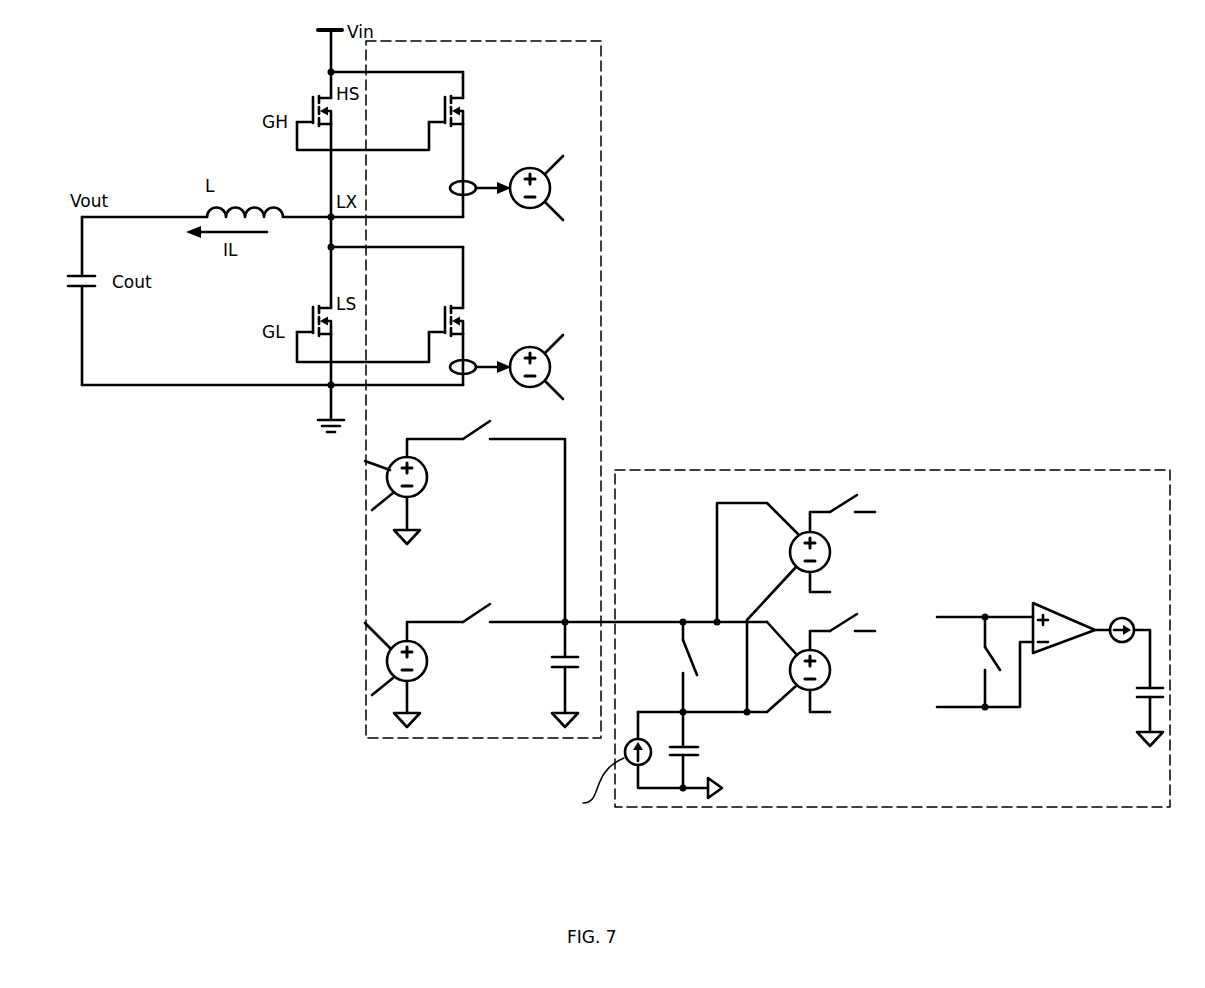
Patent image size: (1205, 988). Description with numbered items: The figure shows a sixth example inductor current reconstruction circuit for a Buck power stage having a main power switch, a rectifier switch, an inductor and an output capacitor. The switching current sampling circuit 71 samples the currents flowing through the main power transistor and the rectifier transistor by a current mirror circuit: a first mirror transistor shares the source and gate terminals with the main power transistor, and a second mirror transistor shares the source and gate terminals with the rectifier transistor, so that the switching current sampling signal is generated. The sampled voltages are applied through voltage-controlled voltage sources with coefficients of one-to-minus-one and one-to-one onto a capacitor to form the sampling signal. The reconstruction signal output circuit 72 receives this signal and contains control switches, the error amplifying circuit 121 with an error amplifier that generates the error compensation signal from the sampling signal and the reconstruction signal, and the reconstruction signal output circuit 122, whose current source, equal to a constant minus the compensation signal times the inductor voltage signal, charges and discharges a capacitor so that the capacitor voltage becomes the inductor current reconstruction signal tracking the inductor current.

The switching current sampling circuit 71 is at (601, 64).
The reconstruction signal output circuit 72 is at (957, 468).
The error amplifying circuit 121 is at (1066, 659).
The reconstruction signal output circuit 122 is at (724, 771).